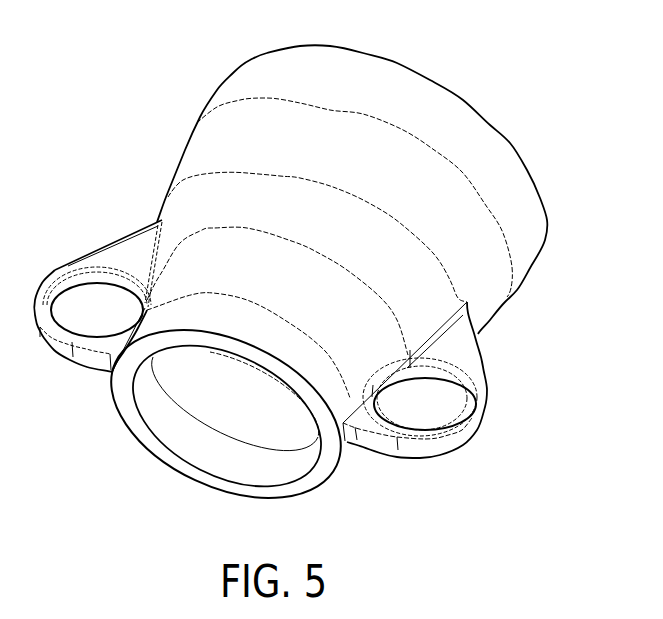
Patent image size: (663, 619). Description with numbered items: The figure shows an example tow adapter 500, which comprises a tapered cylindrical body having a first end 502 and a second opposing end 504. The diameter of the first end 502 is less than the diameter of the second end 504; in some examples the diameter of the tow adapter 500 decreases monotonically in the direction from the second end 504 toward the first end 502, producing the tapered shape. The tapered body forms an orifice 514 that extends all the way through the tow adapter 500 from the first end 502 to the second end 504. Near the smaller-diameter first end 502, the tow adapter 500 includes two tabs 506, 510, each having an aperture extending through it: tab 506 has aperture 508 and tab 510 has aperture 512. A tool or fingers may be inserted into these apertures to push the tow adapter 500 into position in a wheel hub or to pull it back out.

The tow adapter 500 is at (519, 81).
The first end 502 is at (320, 481).
The second opposing end 504 is at (522, 172).
The tab 506 is at (447, 428).
The aperture 508 is at (430, 405).
The tab 510 is at (44, 326).
The aperture 512 is at (95, 307).
The orifice 514 is at (217, 459).